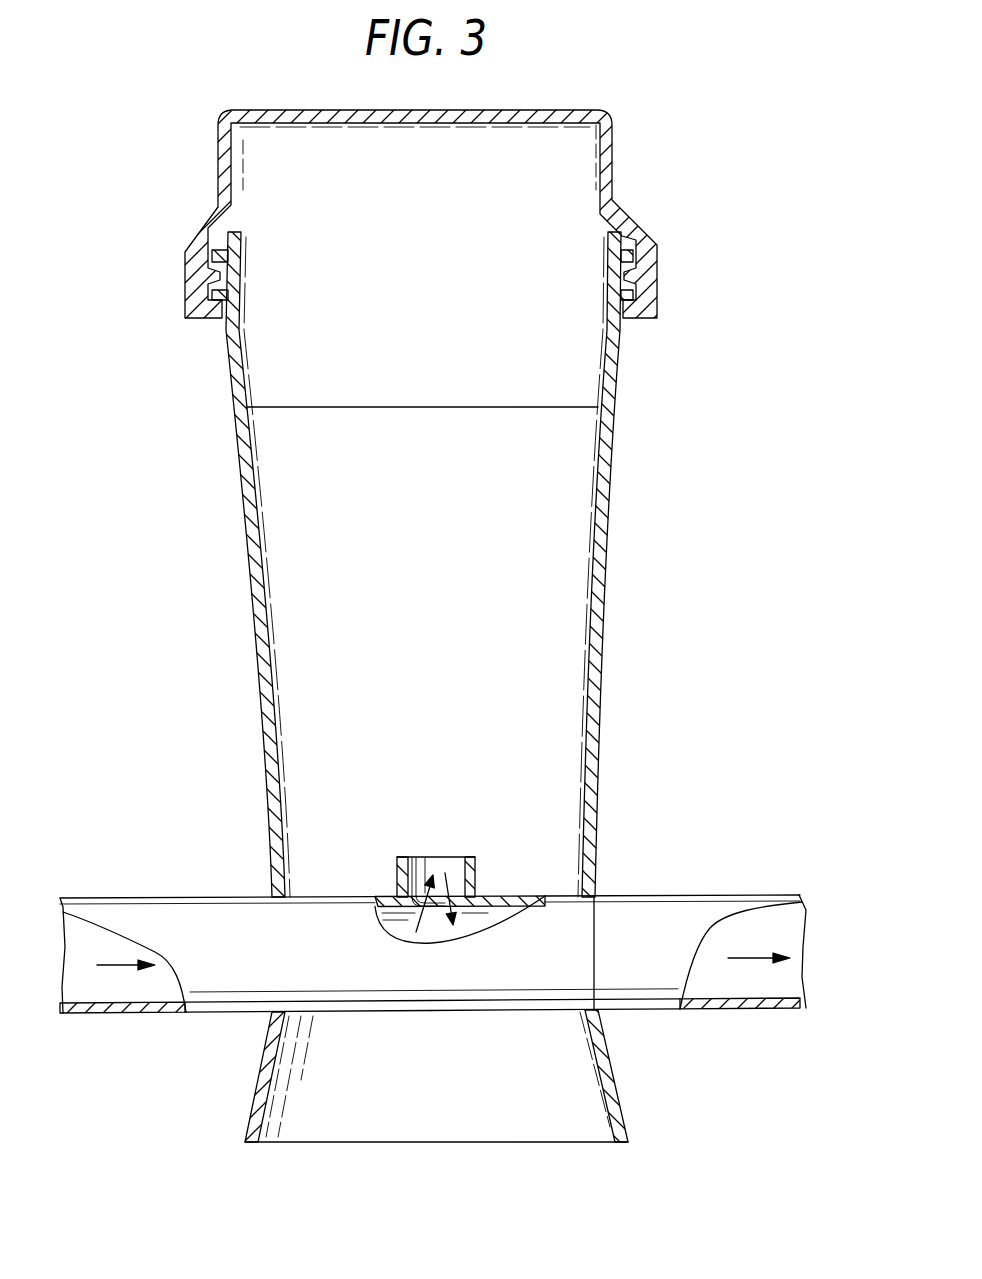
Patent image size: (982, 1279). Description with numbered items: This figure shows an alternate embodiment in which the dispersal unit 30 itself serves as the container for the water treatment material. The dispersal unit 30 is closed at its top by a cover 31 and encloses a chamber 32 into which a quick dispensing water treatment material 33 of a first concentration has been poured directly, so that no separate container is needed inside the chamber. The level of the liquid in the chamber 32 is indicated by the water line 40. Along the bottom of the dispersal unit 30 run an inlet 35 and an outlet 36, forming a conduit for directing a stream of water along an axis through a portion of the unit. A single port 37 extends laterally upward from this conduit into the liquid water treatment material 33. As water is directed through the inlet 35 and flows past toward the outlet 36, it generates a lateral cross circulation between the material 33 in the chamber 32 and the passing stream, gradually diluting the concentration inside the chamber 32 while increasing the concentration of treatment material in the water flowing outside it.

The dispersal unit 30 is at (612, 520).
The cover 31 is at (615, 162).
The chamber 32 is at (472, 248).
The quick dispensing water treatment material 33 is at (471, 548).
The inlet 35 is at (192, 897).
The outlet 36 is at (630, 895).
The port 37 is at (475, 880).
The water line 40 is at (557, 405).